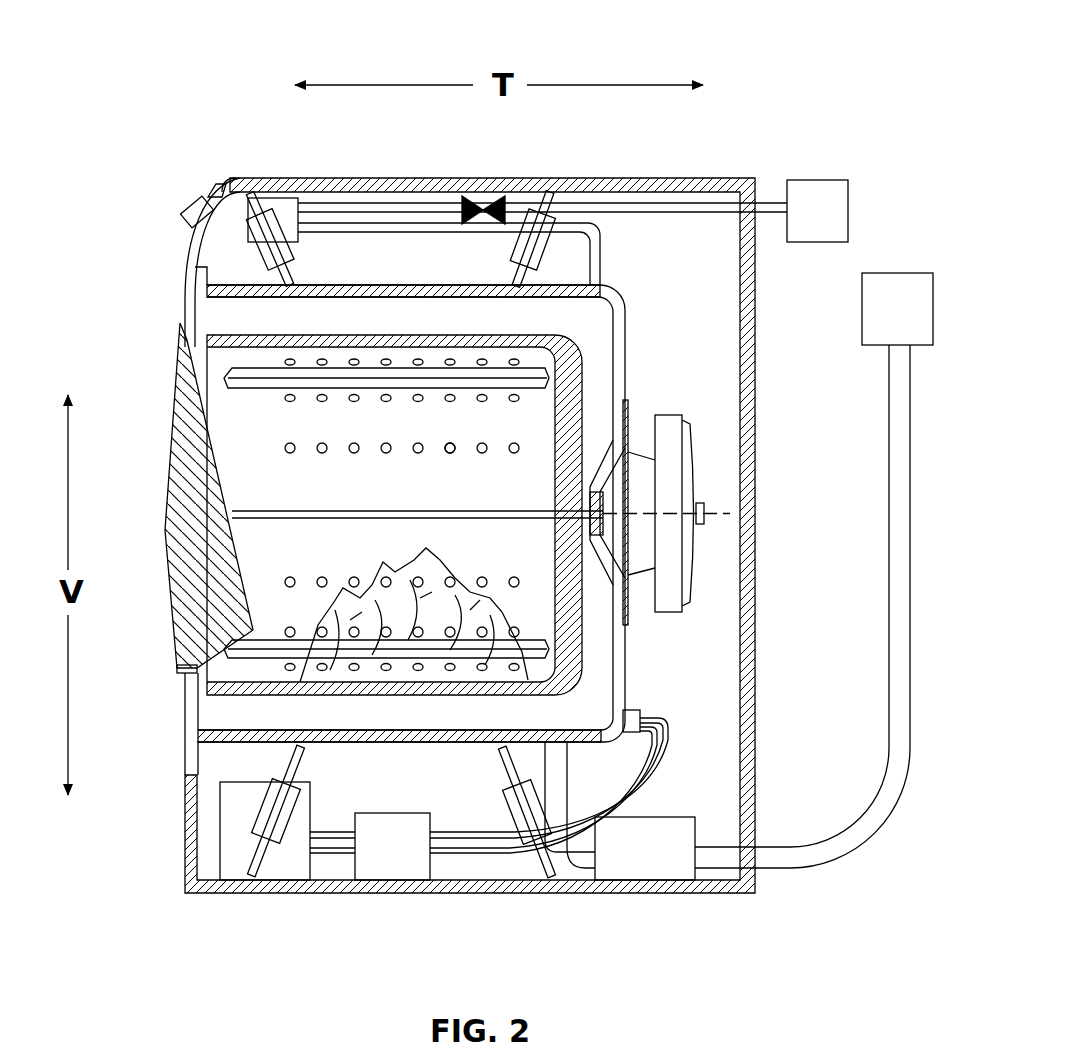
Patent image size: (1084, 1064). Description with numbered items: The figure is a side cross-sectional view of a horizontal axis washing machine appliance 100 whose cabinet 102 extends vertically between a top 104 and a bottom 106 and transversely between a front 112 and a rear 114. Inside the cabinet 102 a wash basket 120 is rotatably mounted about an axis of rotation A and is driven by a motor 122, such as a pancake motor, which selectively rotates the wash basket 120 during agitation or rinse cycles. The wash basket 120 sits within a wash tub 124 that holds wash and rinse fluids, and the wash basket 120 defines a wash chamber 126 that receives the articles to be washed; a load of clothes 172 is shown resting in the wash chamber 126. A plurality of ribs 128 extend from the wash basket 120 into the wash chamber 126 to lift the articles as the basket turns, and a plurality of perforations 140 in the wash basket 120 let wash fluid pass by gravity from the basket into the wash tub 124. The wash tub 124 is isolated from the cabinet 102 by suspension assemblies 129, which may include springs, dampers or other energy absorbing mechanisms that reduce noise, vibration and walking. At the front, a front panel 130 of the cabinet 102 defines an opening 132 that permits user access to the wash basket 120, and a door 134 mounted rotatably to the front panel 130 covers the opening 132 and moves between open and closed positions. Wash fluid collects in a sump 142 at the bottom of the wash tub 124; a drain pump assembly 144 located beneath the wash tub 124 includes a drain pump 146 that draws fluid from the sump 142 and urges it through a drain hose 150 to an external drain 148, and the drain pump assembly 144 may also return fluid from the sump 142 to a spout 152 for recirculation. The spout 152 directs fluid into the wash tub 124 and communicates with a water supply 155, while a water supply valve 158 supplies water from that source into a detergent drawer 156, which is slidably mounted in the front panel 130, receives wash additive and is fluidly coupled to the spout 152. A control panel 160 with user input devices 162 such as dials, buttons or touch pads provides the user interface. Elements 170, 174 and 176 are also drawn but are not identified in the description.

The washing machine appliance 100 is at (230, 85).
The cabinet 102 is at (755, 523).
The top 104 is at (763, 183).
The bottom 106 is at (778, 885).
The front 112 is at (178, 183).
The rear 114 is at (756, 343).
The wash basket 120 is at (400, 340).
The motor 122 is at (668, 452).
The wash tub 124 is at (615, 345).
The wash chamber 126 is at (255, 470).
The ribs 128 is at (332, 511).
The suspension assemblies 129 is at (546, 215).
The front panel 130 is at (190, 715).
The opening 132 is at (218, 375).
The door 134 is at (175, 565).
The perforations 140 is at (452, 452).
The sump 142 is at (582, 708).
The drain pump assembly 144 is at (712, 770).
The drain pump 146 is at (645, 848).
The external drain 148 is at (897, 309).
The drain hose 150 is at (891, 660).
The spout 152 is at (601, 262).
The water supply 155 is at (573, 211).
The detergent drawer 156 is at (288, 198).
The water supply valve 158 is at (487, 195).
The control panel 160 is at (217, 184).
The user input devices 162 is at (186, 216).
The door inner surface 170 is at (200, 412).
The load of clothes 172 is at (386, 553).
The baffle / rib 174 is at (247, 578).
The door window 176 is at (166, 487).
The axis of rotation A is at (720, 511).